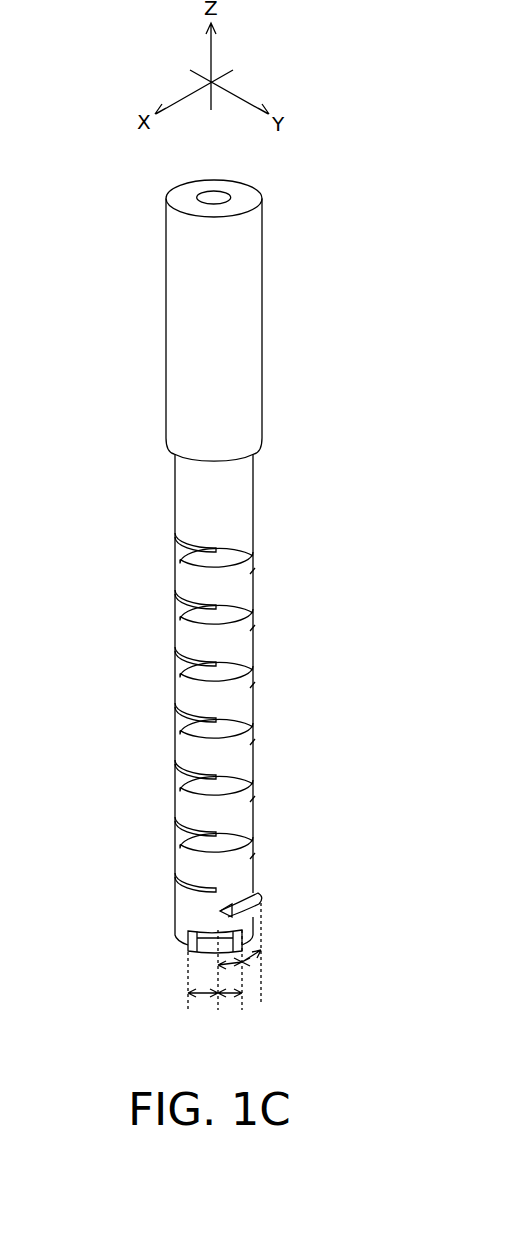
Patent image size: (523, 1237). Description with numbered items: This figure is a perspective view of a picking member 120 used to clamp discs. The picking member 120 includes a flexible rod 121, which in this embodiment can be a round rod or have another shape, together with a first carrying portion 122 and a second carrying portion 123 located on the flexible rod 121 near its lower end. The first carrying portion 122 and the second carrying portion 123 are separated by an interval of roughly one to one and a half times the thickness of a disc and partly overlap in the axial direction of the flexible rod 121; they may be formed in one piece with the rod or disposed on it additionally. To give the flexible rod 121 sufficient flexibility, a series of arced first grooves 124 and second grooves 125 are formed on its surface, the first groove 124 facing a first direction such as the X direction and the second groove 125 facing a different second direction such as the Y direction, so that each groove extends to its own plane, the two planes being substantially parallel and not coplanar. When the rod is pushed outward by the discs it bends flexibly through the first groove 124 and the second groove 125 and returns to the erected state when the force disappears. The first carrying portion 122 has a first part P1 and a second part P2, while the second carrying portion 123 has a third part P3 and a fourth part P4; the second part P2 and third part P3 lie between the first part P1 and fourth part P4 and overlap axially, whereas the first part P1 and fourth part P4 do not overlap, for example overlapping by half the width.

The picking member 120 is at (91, 160).
The flexible rod 121 is at (254, 498).
The first carrying portion 122 is at (214, 932).
The second carrying portion 123 is at (258, 893).
The first groove 124 is at (177, 709).
The second groove 125 is at (222, 740).
The first part P1 is at (203, 991).
The second part P2 is at (228, 996).
The third part P3 is at (233, 975).
The fourth part P4 is at (252, 958).